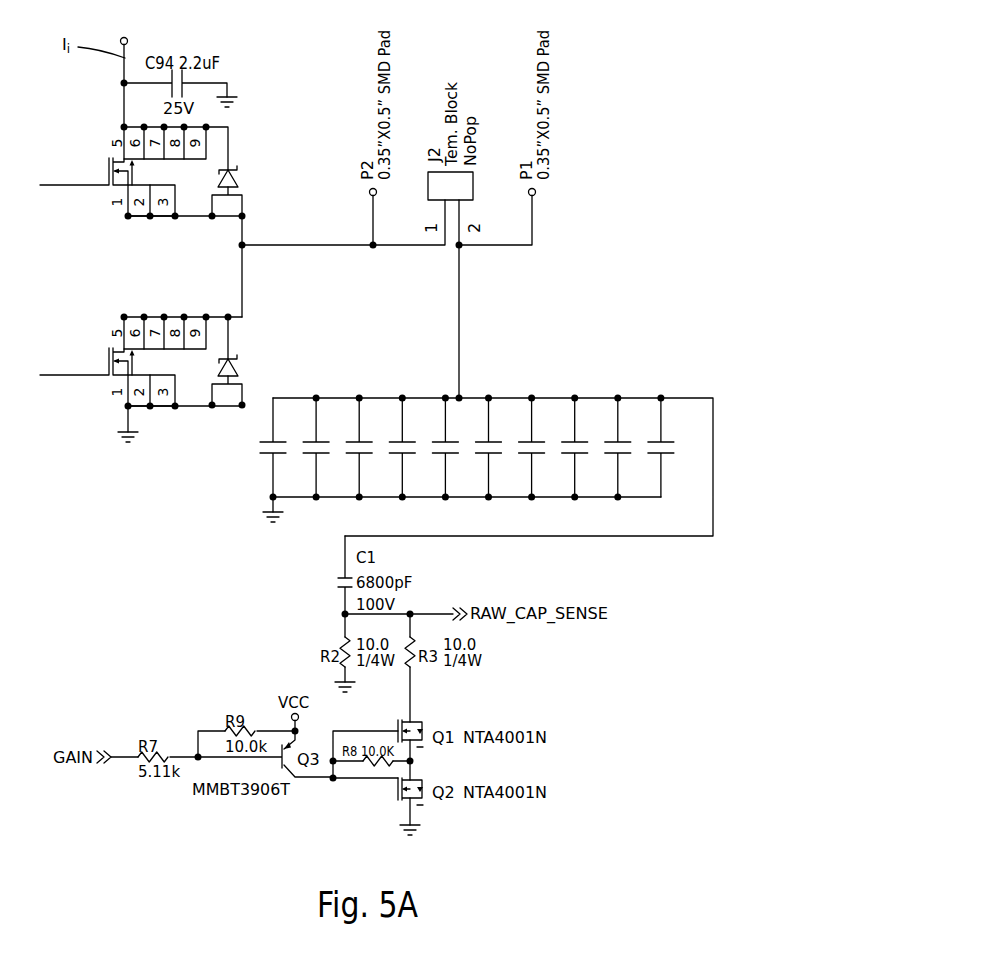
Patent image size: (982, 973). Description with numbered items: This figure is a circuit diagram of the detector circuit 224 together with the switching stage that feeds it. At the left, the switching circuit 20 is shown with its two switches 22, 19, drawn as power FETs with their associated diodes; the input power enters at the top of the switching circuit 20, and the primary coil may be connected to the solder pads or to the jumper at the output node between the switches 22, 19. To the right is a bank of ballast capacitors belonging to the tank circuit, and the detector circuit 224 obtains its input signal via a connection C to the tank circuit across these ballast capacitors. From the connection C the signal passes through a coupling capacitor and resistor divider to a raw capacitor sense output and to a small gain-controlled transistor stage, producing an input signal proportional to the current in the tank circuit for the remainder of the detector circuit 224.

The switch 19 is at (105, 392).
The switching circuit 20 is at (128, 488).
The switch 22 is at (107, 203).
The detector circuit 224 is at (729, 352).
The connection C is at (592, 398).